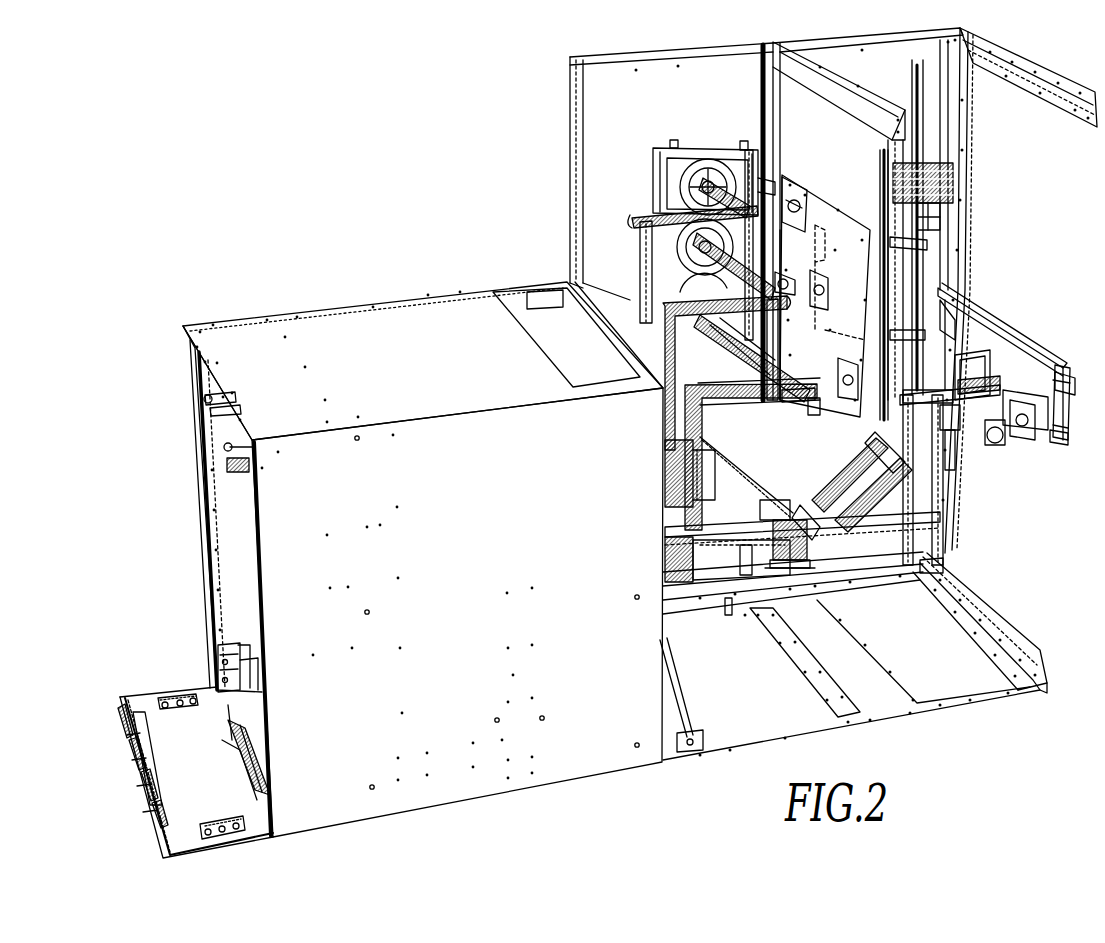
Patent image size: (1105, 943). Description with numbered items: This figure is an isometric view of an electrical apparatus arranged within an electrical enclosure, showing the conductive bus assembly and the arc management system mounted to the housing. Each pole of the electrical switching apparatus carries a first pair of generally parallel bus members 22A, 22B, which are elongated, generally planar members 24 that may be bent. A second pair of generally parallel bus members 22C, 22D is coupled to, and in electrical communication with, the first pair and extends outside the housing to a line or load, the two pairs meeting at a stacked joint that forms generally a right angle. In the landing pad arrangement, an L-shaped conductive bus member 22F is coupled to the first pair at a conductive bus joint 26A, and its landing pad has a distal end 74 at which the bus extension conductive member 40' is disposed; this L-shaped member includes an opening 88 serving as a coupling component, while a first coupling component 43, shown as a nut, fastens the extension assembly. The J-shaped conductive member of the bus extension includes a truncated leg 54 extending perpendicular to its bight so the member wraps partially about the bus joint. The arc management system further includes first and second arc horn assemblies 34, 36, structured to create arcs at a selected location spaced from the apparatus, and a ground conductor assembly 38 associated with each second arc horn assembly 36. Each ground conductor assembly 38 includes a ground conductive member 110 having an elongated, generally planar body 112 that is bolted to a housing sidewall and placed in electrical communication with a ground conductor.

The first coupling component 43 is at (656, 132).
The bus member 22A is at (648, 200).
The bus member 22B is at (640, 262).
The bus member 22C is at (712, 190).
The bus member 22D is at (738, 368).
The conductive bus member 22F is at (1000, 382).
The planar member 24 is at (710, 432).
The conductive bus joint 26A is at (964, 300).
The first arc horn assembly 34 is at (1008, 440).
The second arc horn assembly 36 is at (762, 150).
The ground conductor assembly 38 is at (905, 168).
The conductive member 40' is at (1006, 353).
The truncated leg 54 is at (845, 437).
The distal end 74 is at (948, 428).
The opening 88 is at (1000, 445).
The ground conductive member 110 is at (798, 200).
The body 112 is at (786, 178).